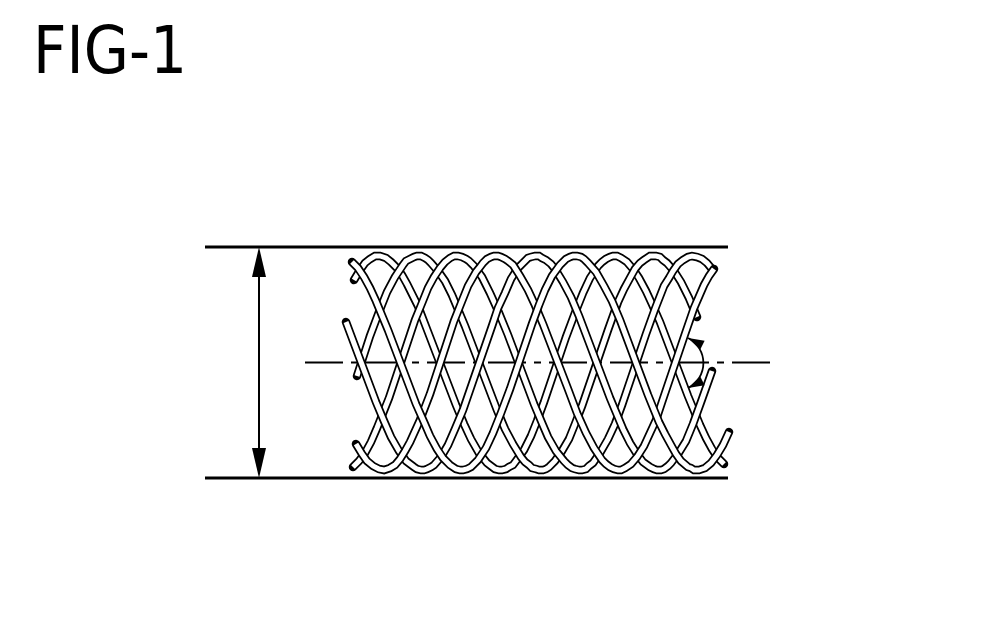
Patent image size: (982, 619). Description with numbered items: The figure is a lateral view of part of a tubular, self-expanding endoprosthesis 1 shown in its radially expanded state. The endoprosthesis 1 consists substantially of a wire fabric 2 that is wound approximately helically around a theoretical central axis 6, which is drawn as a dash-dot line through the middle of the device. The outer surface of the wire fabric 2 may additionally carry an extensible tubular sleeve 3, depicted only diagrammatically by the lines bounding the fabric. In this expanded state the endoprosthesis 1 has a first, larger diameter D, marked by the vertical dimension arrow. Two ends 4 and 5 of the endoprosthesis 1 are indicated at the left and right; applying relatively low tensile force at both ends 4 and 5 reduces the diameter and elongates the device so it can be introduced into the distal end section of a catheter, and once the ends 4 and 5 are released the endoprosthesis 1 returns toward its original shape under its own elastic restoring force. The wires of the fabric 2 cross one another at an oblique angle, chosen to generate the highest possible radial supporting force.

The endoprosthesis 1 is at (767, 247).
The wire fabric 2 is at (731, 311).
The tubular sleeve 3 is at (707, 480).
The end 4 is at (324, 432).
The end 5 is at (768, 433).
The central axis 6 is at (330, 360).
The first diameter D is at (259, 362).